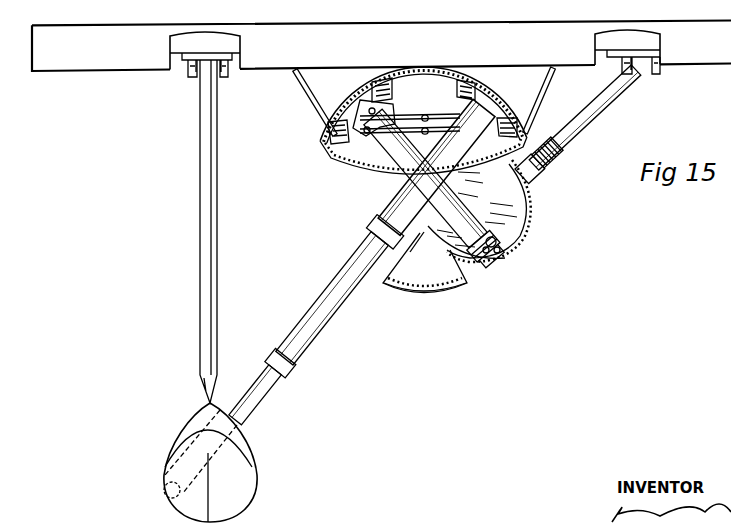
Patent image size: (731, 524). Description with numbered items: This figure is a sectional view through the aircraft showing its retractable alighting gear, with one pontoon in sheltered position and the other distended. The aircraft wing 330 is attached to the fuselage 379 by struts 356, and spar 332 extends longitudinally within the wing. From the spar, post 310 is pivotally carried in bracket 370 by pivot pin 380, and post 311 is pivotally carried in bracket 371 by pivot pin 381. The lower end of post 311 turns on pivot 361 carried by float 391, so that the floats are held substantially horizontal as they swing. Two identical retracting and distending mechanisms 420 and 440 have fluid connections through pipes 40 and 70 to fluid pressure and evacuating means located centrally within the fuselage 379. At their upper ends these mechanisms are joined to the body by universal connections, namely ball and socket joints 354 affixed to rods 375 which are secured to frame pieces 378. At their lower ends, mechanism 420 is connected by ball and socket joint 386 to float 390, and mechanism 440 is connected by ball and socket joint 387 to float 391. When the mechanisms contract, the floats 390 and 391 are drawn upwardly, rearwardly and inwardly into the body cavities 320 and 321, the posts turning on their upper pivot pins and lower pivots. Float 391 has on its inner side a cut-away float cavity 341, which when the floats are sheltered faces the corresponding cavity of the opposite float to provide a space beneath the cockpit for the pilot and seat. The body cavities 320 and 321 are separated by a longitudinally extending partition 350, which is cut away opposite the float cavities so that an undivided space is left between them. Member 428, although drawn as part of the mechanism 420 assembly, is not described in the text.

The aircraft wing 330 is at (515, 45).
The spar 332 is at (212, 43).
The pivot pin 380 is at (190, 72).
The bracket 370 is at (199, 78).
The post 310 is at (205, 166).
The strut 356 is at (312, 95).
The ball and socket joint 354 is at (336, 118).
The frame piece 378 is at (326, 130).
The rod 375 is at (395, 115).
The pipe 40 is at (445, 120).
The pipe 70 is at (437, 134).
The pivot pin 381 is at (660, 66).
The bracket 371 is at (652, 76).
The post 311 is at (598, 108).
The retracting and distending mechanism 440 is at (390, 172).
The retracting and distending mechanism 420 is at (405, 208).
The pivot 361 is at (532, 178).
The float cavity 341 is at (505, 196).
The float 391 is at (527, 228).
The ball and socket joint 387 is at (497, 255).
The partition 350 is at (418, 240).
The body cavity 321 is at (460, 263).
The body cavity 320 is at (388, 275).
The fuselage 379 is at (445, 290).
The rod 428 is at (268, 400).
The float 390 is at (250, 487).
The ball and socket joint 386 is at (170, 500).